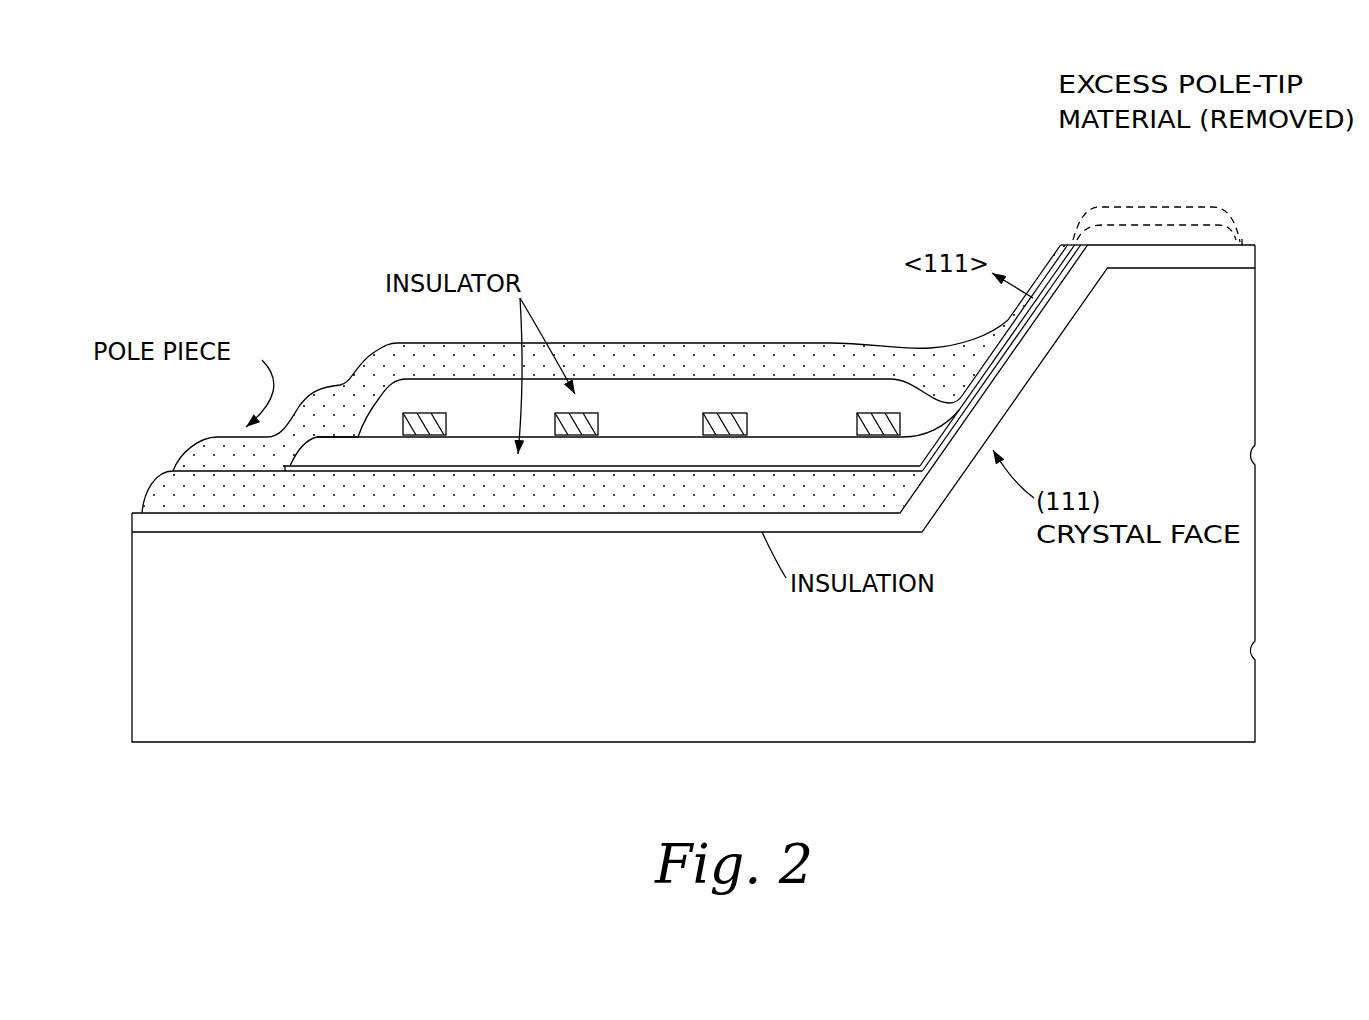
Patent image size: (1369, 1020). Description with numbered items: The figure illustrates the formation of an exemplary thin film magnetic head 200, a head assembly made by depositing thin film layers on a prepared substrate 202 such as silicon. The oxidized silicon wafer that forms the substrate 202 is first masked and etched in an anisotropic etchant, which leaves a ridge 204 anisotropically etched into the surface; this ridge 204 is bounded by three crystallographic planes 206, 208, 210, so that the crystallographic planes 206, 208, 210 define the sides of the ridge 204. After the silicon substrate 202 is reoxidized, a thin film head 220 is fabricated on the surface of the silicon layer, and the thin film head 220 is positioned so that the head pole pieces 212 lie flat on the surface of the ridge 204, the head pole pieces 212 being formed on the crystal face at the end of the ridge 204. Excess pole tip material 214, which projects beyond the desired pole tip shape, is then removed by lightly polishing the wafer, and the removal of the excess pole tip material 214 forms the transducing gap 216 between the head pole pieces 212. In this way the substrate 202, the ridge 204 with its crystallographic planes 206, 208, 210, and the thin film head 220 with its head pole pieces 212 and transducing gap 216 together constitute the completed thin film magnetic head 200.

The thin film magnetic head 200 is at (774, 134).
The substrate 202 is at (526, 742).
The ridge 204 is at (1022, 387).
The crystallographic plane 206 is at (1008, 320).
The crystallographic plane 208 is at (1057, 290).
The crystallographic plane 210 is at (1058, 252).
The head pole pieces 212 is at (1074, 230).
The excess pole tip material 214 is at (1155, 198).
The transducing gap 216 is at (1062, 238).
The thin film head 220 is at (650, 331).